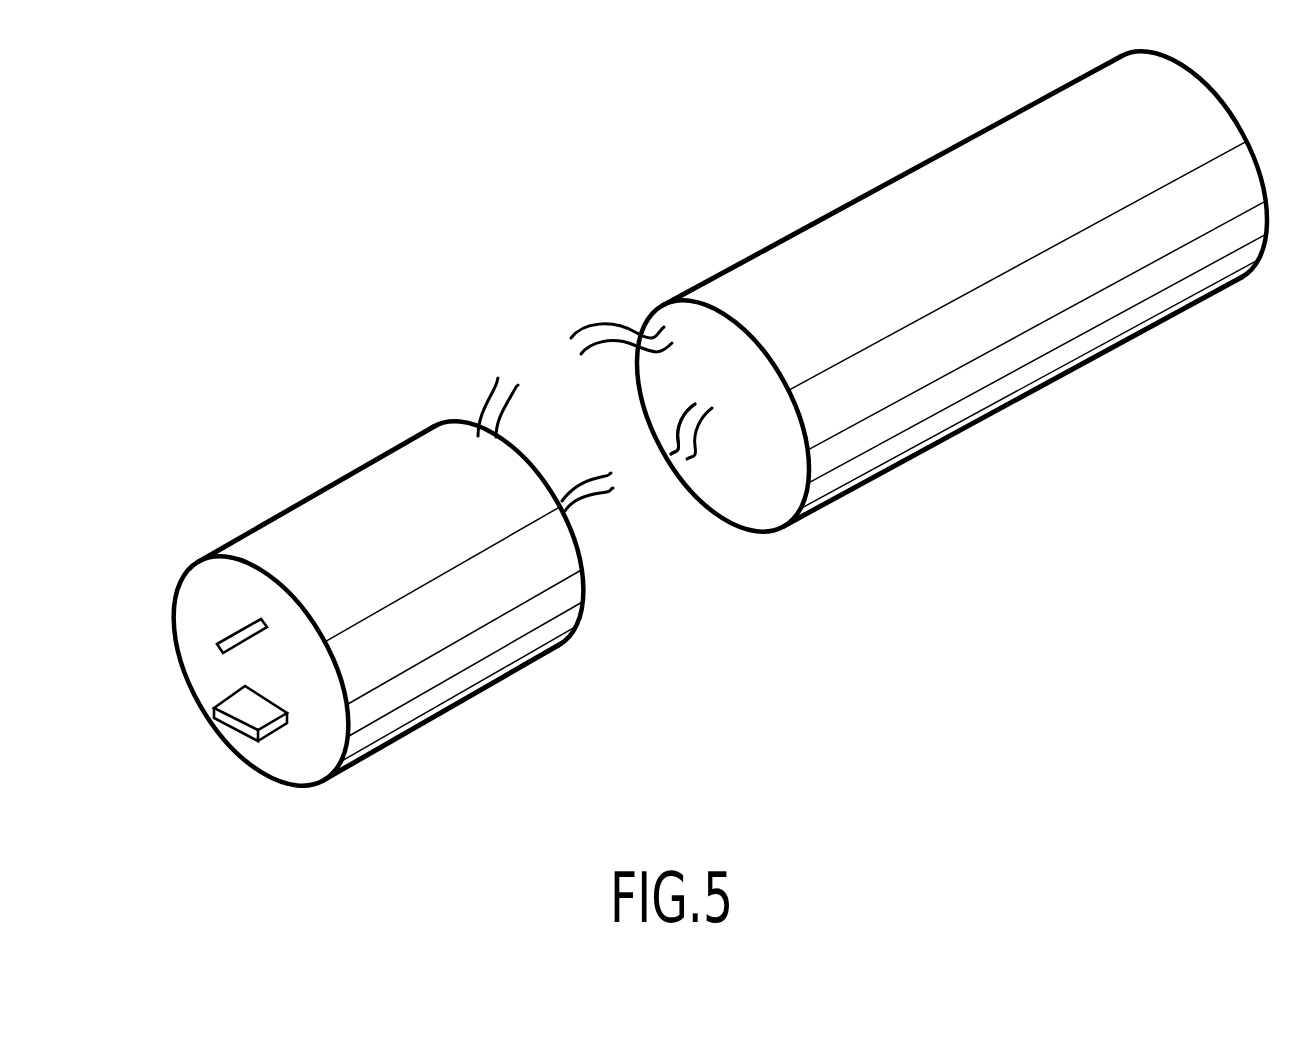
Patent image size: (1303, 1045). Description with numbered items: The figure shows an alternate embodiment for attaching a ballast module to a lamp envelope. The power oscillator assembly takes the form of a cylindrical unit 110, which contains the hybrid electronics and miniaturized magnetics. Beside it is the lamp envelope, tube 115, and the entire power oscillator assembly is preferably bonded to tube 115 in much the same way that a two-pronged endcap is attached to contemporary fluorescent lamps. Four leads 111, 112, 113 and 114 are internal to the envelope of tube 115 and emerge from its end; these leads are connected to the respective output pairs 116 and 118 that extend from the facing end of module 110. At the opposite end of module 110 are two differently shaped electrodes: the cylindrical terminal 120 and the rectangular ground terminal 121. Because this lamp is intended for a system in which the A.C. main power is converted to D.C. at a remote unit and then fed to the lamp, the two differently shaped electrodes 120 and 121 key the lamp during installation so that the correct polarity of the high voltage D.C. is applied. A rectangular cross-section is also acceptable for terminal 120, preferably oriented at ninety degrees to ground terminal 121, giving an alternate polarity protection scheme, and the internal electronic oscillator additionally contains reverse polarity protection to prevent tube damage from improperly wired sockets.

The cylindrical unit 110 is at (433, 722).
The lead 111 is at (701, 503).
The lead 112 is at (701, 503).
The lead 113 is at (580, 331).
The lead 114 is at (597, 326).
The tube 115 is at (910, 458).
The output pair 116 is at (613, 532).
The output pair 118 is at (456, 363).
The cylindrical terminal 120 is at (215, 643).
The ground terminal 121 is at (256, 741).